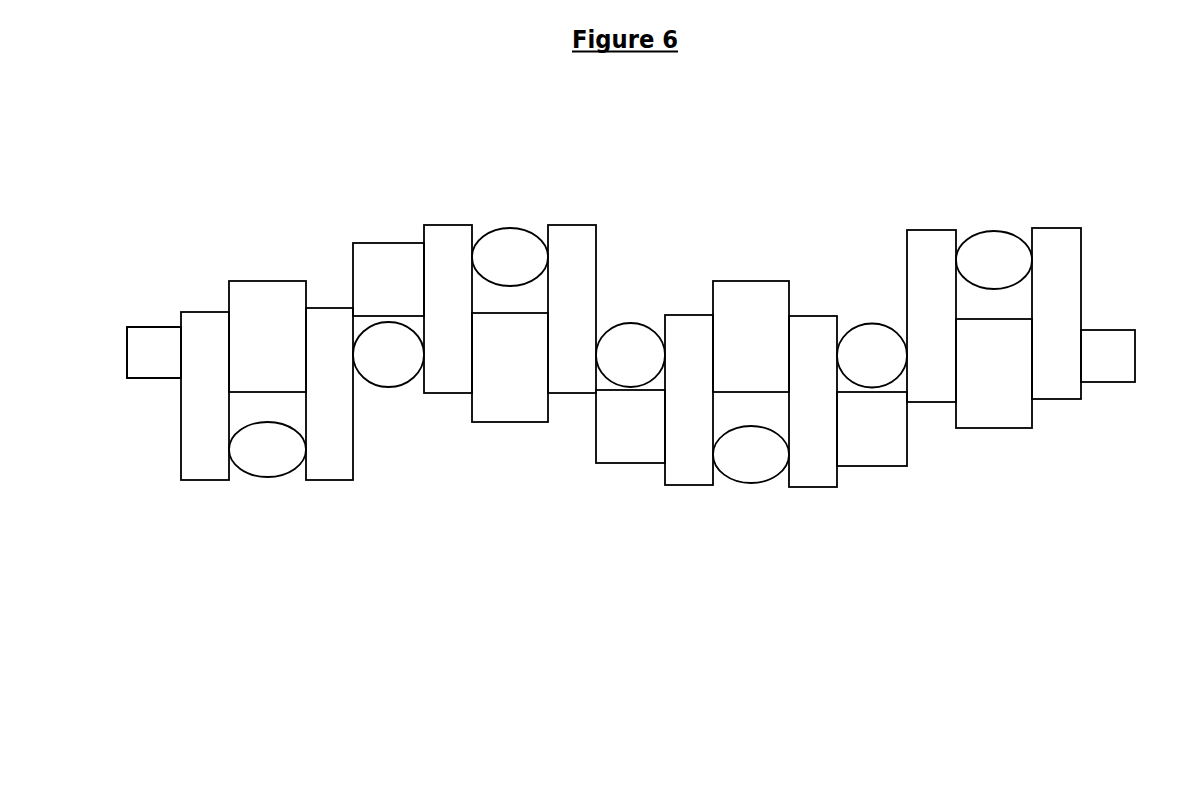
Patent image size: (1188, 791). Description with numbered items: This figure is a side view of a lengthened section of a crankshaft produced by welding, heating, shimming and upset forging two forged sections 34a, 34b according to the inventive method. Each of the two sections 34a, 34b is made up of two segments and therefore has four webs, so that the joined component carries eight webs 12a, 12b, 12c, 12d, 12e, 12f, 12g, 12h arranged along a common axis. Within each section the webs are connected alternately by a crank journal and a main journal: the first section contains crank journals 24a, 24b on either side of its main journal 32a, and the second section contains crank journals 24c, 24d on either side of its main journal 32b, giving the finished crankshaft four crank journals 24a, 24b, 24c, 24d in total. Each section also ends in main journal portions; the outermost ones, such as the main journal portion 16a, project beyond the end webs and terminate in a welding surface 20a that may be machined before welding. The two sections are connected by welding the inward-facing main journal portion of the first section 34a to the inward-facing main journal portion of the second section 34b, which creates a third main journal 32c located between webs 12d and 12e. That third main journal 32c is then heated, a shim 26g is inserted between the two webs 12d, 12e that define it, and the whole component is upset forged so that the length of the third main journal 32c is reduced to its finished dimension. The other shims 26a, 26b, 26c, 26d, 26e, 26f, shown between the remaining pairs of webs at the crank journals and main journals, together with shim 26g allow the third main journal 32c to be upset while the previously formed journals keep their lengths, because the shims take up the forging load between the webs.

The web 12a is at (181, 457).
The web 12b is at (355, 457).
The web 12c is at (456, 395).
The web 12d is at (572, 225).
The web 12e is at (687, 487).
The web 12f is at (812, 488).
The web 12g is at (930, 228).
The web 12h is at (1063, 402).
The main journal portion 16a is at (143, 377).
The welding surface 20a is at (127, 345).
The crank journal 24a is at (262, 480).
The crank journal 24b is at (512, 227).
The crank journal 24c is at (752, 485).
The crank journal 24d is at (997, 230).
The shim 26a is at (265, 280).
The shim 26b is at (505, 425).
The shim 26c is at (389, 243).
The shim 26d is at (755, 280).
The shim 26e is at (997, 432).
The shim 26f is at (877, 467).
The shim 26g is at (620, 465).
The main journal 32a is at (395, 387).
The main journal 32b is at (873, 323).
The third main journal 32c is at (629, 320).
The first forged section 34a is at (316, 144).
The second forged section 34b is at (954, 143).